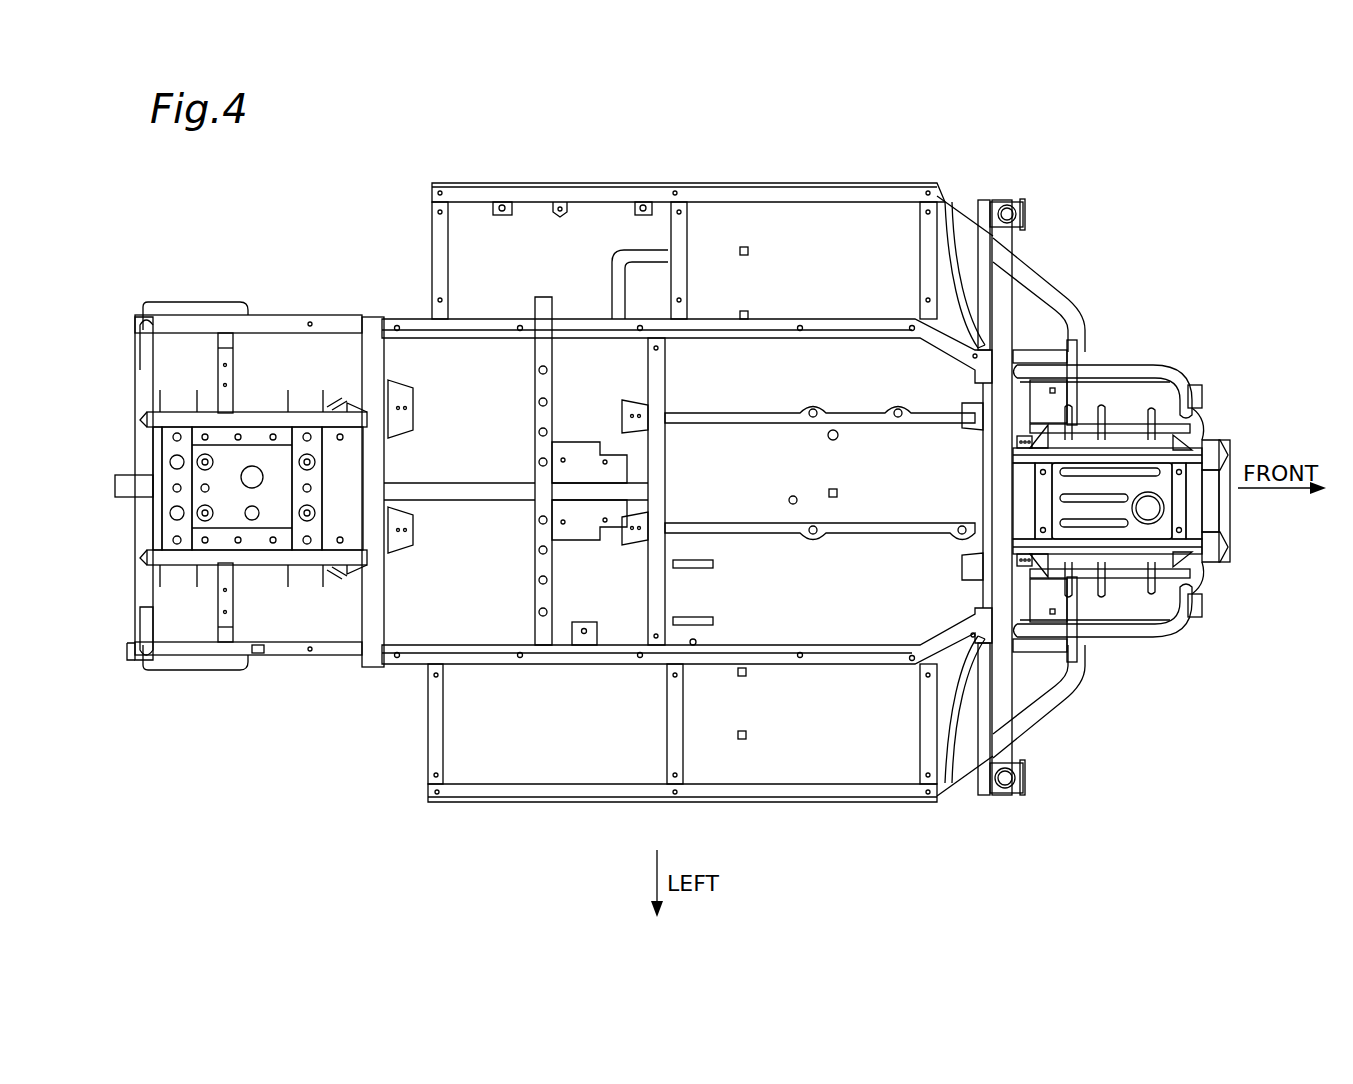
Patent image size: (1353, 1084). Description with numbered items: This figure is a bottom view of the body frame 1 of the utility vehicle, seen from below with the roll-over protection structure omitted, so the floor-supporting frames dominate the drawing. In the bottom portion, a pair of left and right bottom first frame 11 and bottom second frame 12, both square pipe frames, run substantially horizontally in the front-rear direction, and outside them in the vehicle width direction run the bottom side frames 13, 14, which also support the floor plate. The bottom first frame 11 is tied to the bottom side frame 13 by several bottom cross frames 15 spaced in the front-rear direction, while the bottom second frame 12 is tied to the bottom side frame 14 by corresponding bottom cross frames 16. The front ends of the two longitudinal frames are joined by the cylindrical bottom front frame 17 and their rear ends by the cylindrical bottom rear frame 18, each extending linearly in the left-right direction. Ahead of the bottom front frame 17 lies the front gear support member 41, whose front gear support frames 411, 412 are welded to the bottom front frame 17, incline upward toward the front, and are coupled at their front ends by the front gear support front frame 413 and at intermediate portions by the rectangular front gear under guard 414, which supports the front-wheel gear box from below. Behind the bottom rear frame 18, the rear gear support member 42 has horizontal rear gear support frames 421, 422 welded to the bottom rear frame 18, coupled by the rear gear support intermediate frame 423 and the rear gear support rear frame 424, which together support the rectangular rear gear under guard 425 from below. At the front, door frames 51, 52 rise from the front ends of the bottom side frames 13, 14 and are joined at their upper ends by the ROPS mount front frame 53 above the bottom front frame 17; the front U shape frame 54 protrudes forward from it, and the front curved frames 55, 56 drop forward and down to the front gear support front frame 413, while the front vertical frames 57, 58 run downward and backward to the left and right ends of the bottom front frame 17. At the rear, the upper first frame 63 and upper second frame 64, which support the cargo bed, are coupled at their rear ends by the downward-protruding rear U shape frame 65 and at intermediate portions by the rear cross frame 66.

The body frame 1 is at (1124, 248).
The bottom first frame 11 is at (508, 328).
The bottom second frame 12 is at (510, 657).
The bottom side frame 13 is at (736, 190).
The bottom side frame 14 is at (592, 800).
The bottom cross frames 15 is at (440, 228).
The bottom cross frames 16 is at (440, 745).
The bottom front frame 17 is at (1002, 633).
The bottom rear frame 18 is at (373, 635).
The front gear support member 41 is at (1150, 400).
The front gear support frame 411 is at (1123, 452).
The front gear support frame 412 is at (1127, 540).
The front gear support front frame 413 is at (1224, 460).
The front gear under guard 414 is at (1100, 510).
The rear gear support member 42 is at (265, 390).
The rear gear support frame 421 is at (305, 412).
The rear gear support frame 422 is at (300, 560).
The rear gear support intermediate frame 423 is at (310, 545).
The rear gear support rear frame 424 is at (172, 548).
The rear gear under guard 425 is at (232, 493).
The door frame 51 is at (963, 213).
The door frame 52 is at (968, 775).
The ROPS mount front frame 53 is at (1003, 795).
The front U shape frame 54 is at (1033, 280).
The front curved frame 55 is at (1178, 375).
The front curved frame 56 is at (1178, 625).
The front vertical frame 57 is at (1048, 352).
The front vertical frame 58 is at (1075, 660).
The upper first frame 63 is at (277, 652).
The upper second frame 64 is at (245, 330).
The rear U shape frame 65 is at (143, 385).
The rear cross frame 66 is at (225, 345).